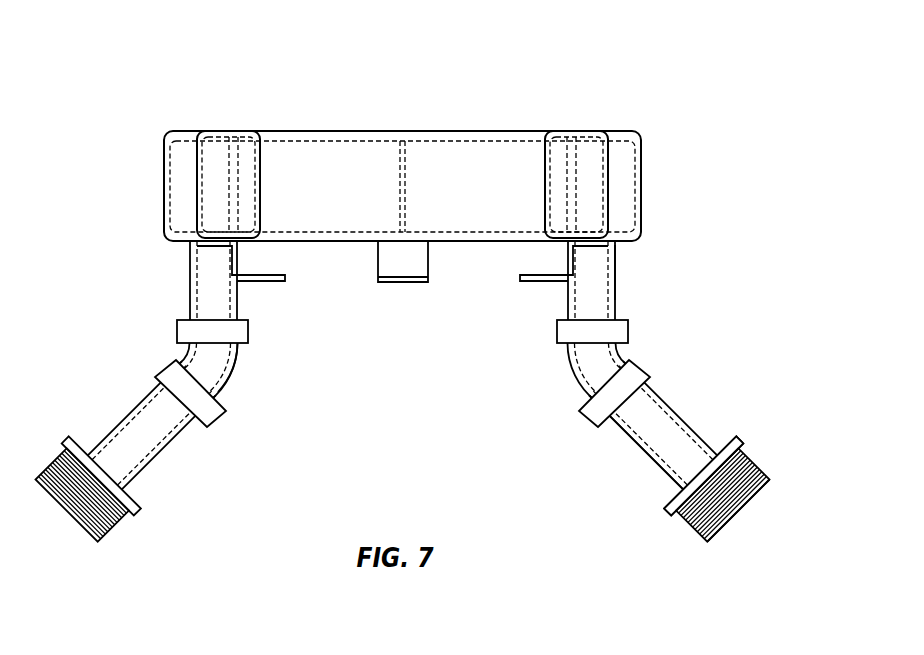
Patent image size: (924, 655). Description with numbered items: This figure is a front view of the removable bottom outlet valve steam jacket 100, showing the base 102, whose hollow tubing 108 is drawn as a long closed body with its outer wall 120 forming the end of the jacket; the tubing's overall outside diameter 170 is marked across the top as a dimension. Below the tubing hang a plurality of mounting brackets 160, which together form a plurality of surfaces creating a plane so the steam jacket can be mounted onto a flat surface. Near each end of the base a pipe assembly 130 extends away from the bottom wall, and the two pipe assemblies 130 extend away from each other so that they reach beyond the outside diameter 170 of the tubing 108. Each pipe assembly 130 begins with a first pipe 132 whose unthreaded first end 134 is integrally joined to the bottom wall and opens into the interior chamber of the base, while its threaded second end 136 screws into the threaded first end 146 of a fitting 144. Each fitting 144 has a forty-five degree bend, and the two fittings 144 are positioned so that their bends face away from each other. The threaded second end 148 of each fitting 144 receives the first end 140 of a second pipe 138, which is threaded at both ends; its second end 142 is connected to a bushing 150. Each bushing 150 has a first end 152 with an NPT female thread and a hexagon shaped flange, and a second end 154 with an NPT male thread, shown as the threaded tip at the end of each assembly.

The BOV steam jacket 100 is at (656, 109).
The base 102 is at (598, 131).
The hollow tubing 108 is at (641, 200).
The outer wall 120 is at (165, 165).
The pipe assembly 130 is at (237, 385).
The first pipe 132 is at (191, 291).
The first end 134 is at (616, 254).
The second end 136 is at (617, 304).
The second pipe 138 is at (170, 456).
The first end 140 is at (621, 437).
The second end 142 is at (670, 508).
The fitting 144 is at (178, 353).
The threaded first end 146 is at (558, 343).
The threaded second end 148 is at (648, 367).
The bushing 150 is at (108, 542).
The first end 152 is at (742, 445).
The second end 154 is at (706, 548).
The mounting bracket 160 is at (280, 281).
The outside diameter 170 is at (641, 130).